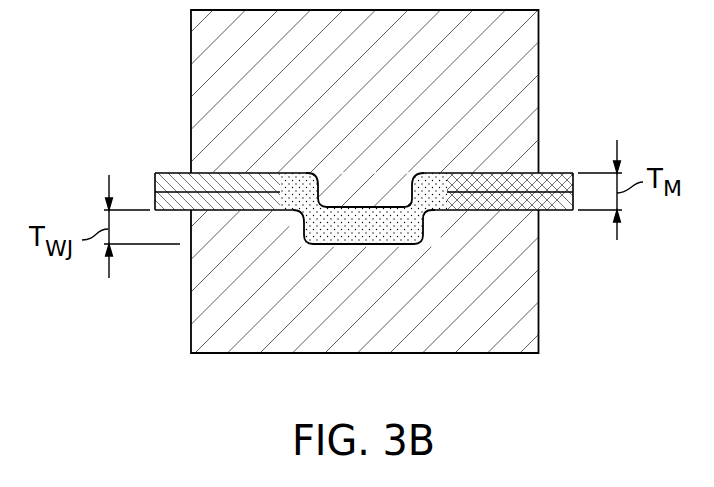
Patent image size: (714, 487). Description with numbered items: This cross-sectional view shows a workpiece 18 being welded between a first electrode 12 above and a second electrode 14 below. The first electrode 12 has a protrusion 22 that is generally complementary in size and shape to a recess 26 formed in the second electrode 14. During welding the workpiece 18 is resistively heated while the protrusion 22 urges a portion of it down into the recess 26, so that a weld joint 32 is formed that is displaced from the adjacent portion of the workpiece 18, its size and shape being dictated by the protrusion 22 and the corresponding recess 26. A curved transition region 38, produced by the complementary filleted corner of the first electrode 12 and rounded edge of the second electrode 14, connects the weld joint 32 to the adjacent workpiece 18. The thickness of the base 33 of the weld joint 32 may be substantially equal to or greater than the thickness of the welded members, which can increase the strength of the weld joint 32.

The first electrode 12 is at (538, 32).
The second electrode 14 is at (538, 296).
The workpiece 18 is at (558, 158).
The protrusion 22 is at (413, 193).
The recess 26 is at (308, 239).
The weld joint 32 is at (407, 235).
The base 33 is at (379, 245).
The curved transition region 38 is at (298, 192).